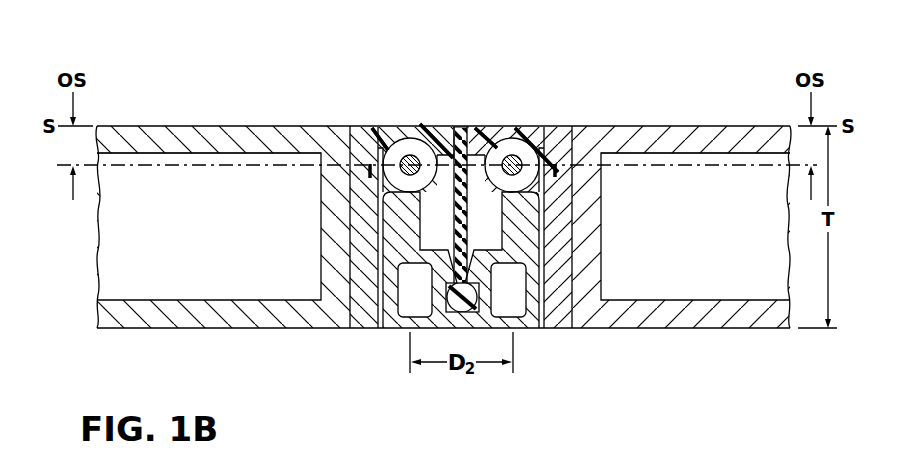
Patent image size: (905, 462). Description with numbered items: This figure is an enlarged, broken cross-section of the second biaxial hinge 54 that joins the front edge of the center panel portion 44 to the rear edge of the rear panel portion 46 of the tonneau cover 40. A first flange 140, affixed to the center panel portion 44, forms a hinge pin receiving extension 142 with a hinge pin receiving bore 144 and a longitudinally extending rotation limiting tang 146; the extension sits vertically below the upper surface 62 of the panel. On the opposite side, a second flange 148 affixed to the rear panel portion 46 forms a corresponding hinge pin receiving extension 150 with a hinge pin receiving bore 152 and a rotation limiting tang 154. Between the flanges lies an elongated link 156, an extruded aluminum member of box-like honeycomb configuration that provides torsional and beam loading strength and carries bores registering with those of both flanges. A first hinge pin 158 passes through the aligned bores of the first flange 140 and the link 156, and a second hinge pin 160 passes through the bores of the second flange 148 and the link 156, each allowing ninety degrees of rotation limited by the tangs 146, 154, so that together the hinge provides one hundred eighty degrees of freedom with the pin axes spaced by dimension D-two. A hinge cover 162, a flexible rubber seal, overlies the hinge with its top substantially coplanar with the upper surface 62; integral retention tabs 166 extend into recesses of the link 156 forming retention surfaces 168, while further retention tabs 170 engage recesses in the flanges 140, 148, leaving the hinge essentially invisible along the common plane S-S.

The tonneau cover 40 is at (764, 98).
The center panel portion 44 is at (215, 125).
The rear panel portion 46 is at (690, 125).
The second biaxial hinge 54 is at (477, 107).
The upper surface 62 is at (259, 125).
The first flange 140 is at (365, 330).
The hinge pin receiving extension 142 is at (383, 126).
The hinge pin receiving bore 144 is at (427, 126).
The rotation limiting tang 146 is at (438, 126).
The second flange 148 is at (557, 330).
The hinge pin receiving extension 150 is at (538, 126).
The hinge pin receiving bore 152 is at (507, 126).
The rotation limiting tang 154 is at (487, 126).
The link 156 is at (403, 247).
The first hinge pin 158 is at (403, 126).
The second hinge pin 160 is at (522, 126).
The hinge cover 162 is at (460, 126).
The retention tab 166 is at (463, 302).
The retention surface 168 is at (468, 284).
The retention tab 170 is at (372, 165).